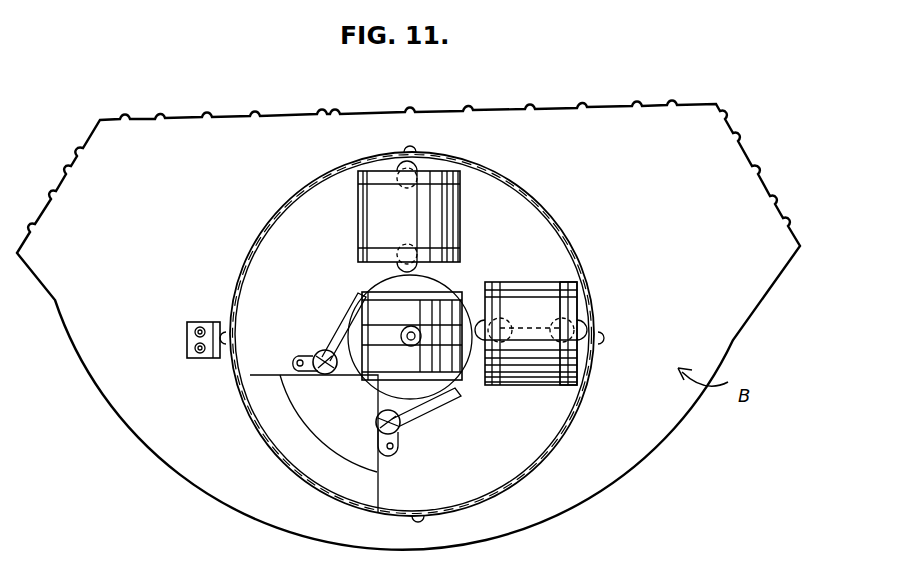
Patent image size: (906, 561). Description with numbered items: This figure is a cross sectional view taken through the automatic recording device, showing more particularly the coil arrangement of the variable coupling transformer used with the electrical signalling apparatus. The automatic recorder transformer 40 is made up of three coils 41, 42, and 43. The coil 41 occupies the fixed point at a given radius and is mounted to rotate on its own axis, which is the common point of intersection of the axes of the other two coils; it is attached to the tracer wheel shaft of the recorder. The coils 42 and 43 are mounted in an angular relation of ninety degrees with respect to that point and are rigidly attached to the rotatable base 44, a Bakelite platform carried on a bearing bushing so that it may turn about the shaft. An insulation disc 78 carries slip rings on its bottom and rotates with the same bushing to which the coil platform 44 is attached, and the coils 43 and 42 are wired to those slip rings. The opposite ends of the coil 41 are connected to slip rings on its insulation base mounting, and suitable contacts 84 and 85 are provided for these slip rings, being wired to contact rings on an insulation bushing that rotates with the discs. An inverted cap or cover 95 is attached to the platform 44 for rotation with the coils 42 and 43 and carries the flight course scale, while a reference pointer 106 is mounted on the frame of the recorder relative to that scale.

The inverted cap or cover 95 is at (530, 196).
The rotatable base 44 is at (517, 427).
The insulation disc 78 is at (285, 471).
The coil 43 is at (385, 214).
The coil 41 is at (443, 394).
The contact 85 is at (346, 328).
The contact 84 is at (415, 414).
The coil 42 is at (540, 296).
The automatic recorder transformer 40 is at (594, 308).
The reference pointer 106 is at (204, 365).